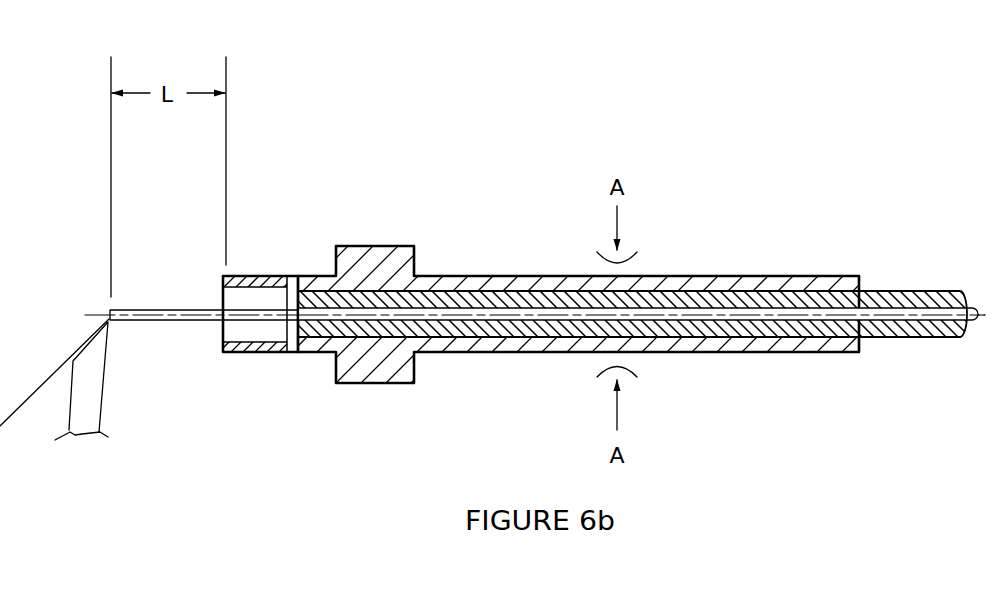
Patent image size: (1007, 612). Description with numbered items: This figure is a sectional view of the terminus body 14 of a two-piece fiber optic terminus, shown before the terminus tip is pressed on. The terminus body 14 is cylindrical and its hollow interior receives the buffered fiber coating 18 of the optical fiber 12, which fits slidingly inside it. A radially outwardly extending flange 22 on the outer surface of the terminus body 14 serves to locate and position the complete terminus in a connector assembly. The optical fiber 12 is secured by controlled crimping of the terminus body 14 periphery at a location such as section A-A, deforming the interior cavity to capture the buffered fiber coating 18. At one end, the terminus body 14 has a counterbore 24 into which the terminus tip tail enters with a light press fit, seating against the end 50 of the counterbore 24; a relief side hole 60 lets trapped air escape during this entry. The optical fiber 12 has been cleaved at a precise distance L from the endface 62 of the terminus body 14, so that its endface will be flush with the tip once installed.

The optical fiber 12 is at (204, 232).
The terminus body 14 is at (567, 276).
The buffered fiber coating 18 is at (913, 281).
The radially outwardly extending flange 22 is at (629, 364).
The counterbore 24 is at (110, 409).
The end of counterbore 50 is at (251, 339).
The relief side hole 60 is at (271, 277).
The endface of terminus body 62 is at (251, 297).